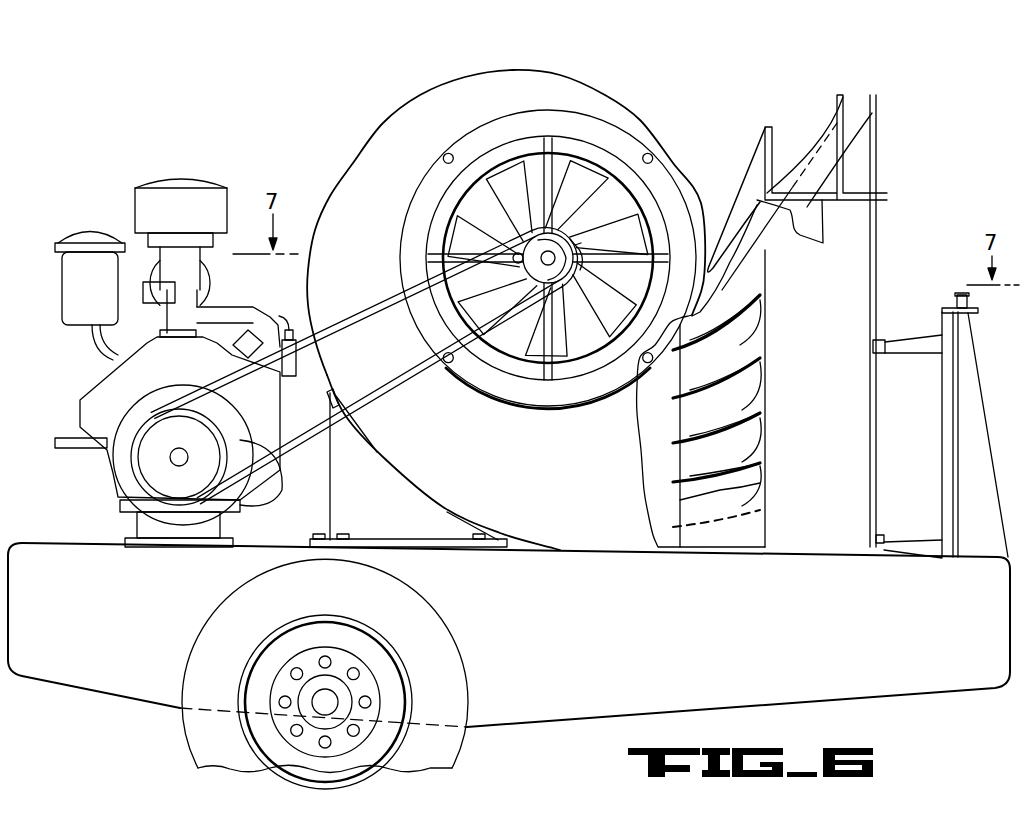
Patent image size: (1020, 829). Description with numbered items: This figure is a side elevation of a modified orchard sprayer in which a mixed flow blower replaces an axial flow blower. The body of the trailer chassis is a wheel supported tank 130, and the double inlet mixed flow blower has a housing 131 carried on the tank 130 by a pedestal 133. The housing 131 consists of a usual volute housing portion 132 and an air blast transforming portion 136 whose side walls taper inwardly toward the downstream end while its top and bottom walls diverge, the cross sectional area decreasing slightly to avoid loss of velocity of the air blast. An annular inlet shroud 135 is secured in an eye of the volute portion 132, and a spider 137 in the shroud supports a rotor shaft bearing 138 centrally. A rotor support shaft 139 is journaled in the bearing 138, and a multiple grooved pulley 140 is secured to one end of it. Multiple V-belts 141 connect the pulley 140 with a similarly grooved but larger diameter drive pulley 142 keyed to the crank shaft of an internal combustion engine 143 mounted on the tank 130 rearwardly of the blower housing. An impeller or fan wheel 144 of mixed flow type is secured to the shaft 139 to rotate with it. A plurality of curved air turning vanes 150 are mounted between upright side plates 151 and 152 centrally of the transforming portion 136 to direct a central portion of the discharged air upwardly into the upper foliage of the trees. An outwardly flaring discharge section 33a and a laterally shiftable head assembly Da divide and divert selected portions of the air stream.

The wheel supported tank 130 is at (637, 656).
The housing 131 is at (413, 107).
The volute housing portion 132 is at (515, 453).
The pedestal 133 is at (395, 523).
The annular inlet shroud 135 is at (418, 210).
The air blast transforming portion 136 is at (748, 184).
The spider 137 is at (552, 193).
The rotor shaft bearing 138 is at (505, 268).
The rotor support shaft 139 is at (556, 268).
The multiple grooved pulley 140 is at (556, 240).
The multiple V-belts 141 is at (370, 397).
The drive pulley 142 is at (152, 463).
The internal combustion engine 143 is at (118, 390).
The impeller or fan wheel 144 is at (600, 287).
The curved air turning vanes 150 is at (745, 325).
The upright side plate 151 is at (703, 418).
The upright side plate 152 is at (690, 515).
The outwardly flaring discharge section 33a is at (795, 158).
The laterally shiftable head assembly Da is at (860, 223).